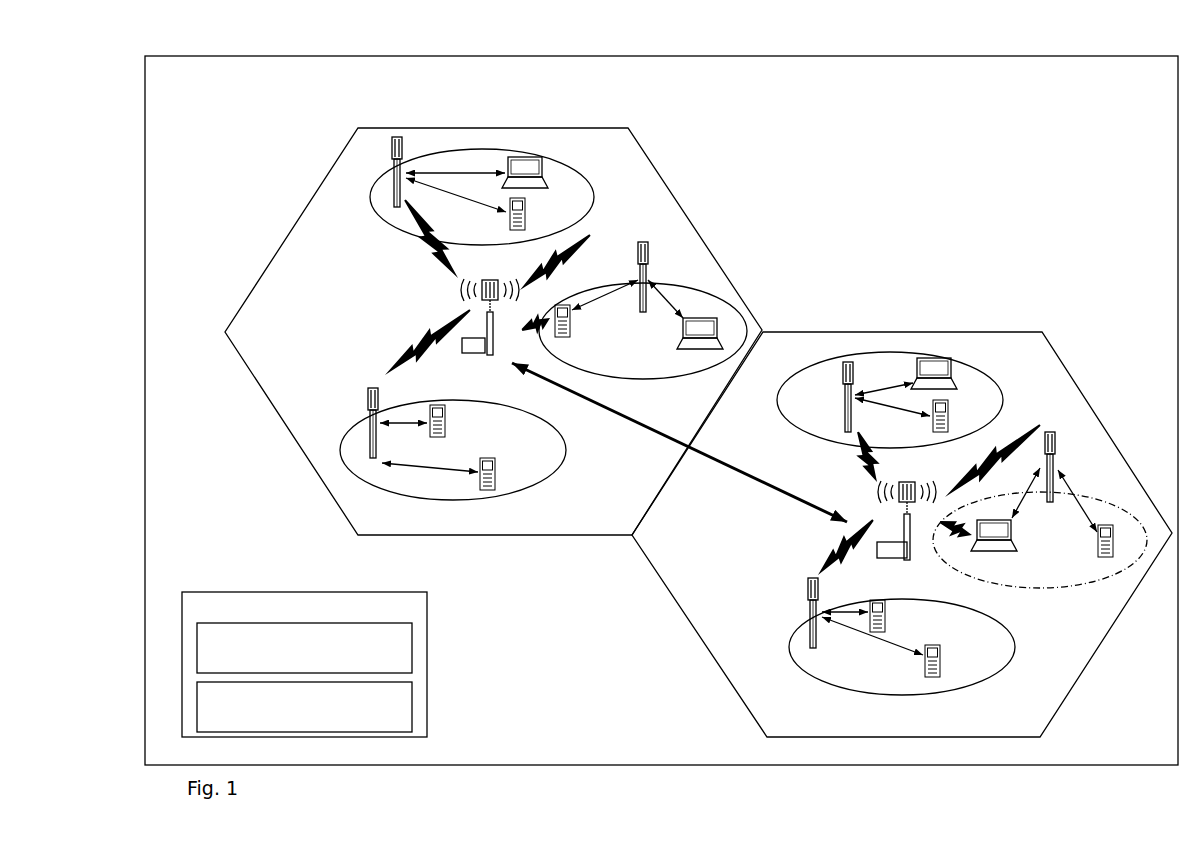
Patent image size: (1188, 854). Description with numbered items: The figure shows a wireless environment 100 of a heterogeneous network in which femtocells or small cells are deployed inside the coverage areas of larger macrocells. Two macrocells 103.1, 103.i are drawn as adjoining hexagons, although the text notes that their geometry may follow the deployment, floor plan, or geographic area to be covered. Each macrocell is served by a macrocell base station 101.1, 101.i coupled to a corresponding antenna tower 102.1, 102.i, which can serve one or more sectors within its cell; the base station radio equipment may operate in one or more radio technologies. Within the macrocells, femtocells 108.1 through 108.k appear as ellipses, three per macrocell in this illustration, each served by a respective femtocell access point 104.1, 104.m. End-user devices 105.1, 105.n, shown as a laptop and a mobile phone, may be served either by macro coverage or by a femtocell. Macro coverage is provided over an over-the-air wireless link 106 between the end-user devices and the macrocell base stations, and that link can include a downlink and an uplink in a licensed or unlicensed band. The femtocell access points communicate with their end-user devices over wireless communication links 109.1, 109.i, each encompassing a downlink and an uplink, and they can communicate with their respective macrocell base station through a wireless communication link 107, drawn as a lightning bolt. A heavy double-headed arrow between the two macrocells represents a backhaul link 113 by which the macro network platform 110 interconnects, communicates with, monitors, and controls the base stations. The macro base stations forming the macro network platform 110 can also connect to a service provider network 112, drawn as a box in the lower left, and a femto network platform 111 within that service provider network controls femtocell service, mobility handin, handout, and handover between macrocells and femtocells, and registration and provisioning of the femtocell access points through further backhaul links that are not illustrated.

The wireless environment 100 is at (243, 98).
The macrocell base station 101.1 is at (462, 347).
The macrocell base station 101.i is at (880, 558).
The antenna tower 102.1 is at (482, 312).
The antenna tower 102.i is at (900, 512).
The macrocell 103.1 is at (225, 333).
The macrocell 103.i is at (1042, 332).
The femtocell access point 104.1 is at (390, 168).
The femtocell access point 104.m is at (653, 260).
The end-user device 105.1 is at (547, 167).
The end-user device 105.n is at (540, 210).
The over-the-air wireless link 106 is at (578, 362).
The wireless communication link 107 is at (445, 252).
The femtocell 108.1 is at (372, 197).
The femtocell 108.k is at (567, 447).
The wireless communication link 109.1 is at (470, 171).
The wireless communication link 109.i is at (470, 178).
The macro network platform 110 is at (413, 648).
The femto network platform 111 is at (413, 707).
The service provider network 112 is at (347, 639).
The backhaul link 113 is at (750, 480).